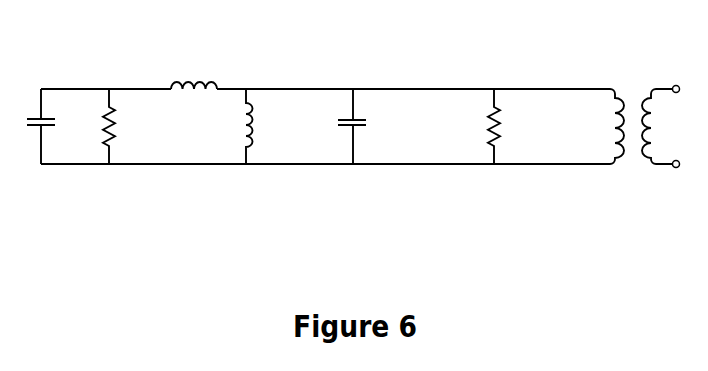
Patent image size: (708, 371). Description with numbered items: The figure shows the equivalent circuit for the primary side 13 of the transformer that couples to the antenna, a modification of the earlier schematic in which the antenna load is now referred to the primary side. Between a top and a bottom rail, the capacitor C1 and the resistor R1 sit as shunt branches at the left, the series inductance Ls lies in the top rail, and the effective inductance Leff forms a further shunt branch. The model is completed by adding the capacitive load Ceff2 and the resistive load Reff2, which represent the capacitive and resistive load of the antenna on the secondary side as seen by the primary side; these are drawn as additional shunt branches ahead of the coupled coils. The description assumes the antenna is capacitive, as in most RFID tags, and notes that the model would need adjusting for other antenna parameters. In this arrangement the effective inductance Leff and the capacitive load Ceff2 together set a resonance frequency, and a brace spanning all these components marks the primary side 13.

The primary side 13 is at (353, 154).
The capacitor C1 is at (51, 126).
The resistor R1 is at (120, 126).
The series inductance Ls is at (194, 75).
The effective inductance Leff is at (263, 126).
The capacitive load Ceff2 is at (370, 126).
The resistive load Reff2 is at (513, 126).